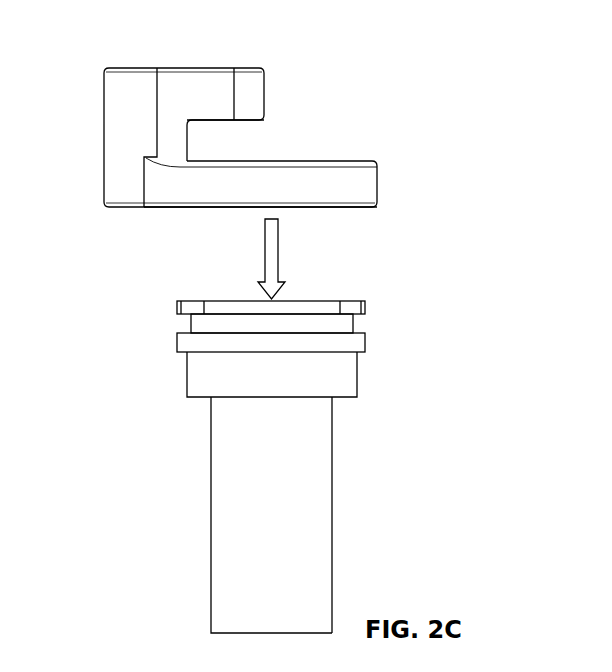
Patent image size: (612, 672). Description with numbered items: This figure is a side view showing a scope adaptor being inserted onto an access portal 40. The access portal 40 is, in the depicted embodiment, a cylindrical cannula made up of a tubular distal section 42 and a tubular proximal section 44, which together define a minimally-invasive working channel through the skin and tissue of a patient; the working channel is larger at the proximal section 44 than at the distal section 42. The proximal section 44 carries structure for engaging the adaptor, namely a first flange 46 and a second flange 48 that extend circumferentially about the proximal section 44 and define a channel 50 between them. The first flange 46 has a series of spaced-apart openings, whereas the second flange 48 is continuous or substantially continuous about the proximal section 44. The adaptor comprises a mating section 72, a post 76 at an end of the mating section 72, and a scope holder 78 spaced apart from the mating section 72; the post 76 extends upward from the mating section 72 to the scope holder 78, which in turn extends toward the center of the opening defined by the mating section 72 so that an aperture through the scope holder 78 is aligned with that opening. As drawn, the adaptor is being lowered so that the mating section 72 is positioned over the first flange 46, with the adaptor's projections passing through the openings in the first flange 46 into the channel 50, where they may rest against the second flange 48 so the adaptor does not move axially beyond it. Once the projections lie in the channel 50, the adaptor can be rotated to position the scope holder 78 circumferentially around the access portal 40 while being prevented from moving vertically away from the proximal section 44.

The access portal 40 is at (318, 498).
The distal section 42 is at (225, 506).
The proximal section 44 is at (200, 368).
The first flange 46 is at (368, 307).
The second flange 48 is at (360, 340).
The channel 50 is at (180, 323).
The mating section 72 is at (367, 187).
The post 76 is at (117, 127).
The scope holder 78 is at (195, 82).